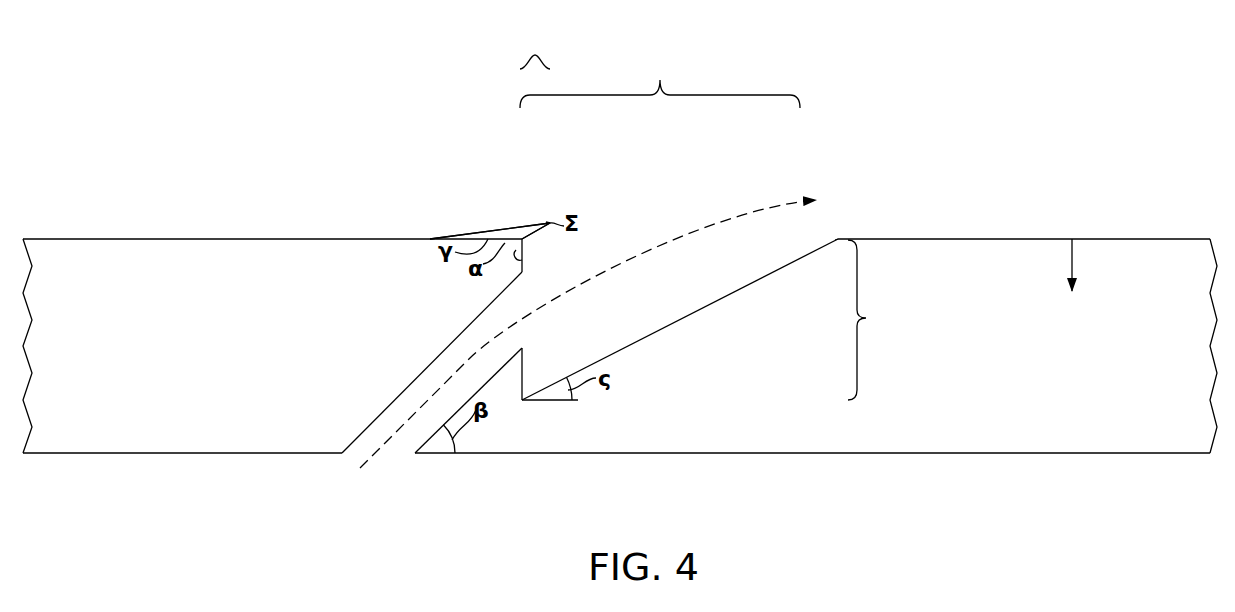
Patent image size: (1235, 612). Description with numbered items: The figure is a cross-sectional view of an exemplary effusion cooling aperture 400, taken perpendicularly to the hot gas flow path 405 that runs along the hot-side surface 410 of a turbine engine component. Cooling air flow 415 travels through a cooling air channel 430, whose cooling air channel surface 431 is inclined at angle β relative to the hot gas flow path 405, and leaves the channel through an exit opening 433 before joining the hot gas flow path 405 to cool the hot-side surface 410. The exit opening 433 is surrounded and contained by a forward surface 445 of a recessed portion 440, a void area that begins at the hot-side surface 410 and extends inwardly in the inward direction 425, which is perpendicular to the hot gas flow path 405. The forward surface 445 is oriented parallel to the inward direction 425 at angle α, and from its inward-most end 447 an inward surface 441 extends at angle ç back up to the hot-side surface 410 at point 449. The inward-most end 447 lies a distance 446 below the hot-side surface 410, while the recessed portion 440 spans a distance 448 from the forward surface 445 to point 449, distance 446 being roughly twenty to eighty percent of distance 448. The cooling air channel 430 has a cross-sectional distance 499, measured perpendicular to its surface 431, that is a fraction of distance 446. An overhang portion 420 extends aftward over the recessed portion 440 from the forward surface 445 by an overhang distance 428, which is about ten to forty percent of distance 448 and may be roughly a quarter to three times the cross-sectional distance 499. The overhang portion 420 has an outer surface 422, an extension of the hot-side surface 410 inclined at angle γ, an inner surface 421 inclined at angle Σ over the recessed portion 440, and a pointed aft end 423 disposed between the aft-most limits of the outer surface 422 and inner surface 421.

The effusion cooling aperture 400 is at (246, 175).
The hot gas flow path 405 is at (874, 75).
The hot-side surface 410 is at (126, 239).
The cooling air flow 415 is at (387, 443).
The overhang portion 420 is at (555, 212).
The inner surface 421 is at (540, 240).
The outer surface 422 is at (480, 237).
The aft end 423 is at (548, 218).
The inward direction 425 is at (1072, 262).
The overhang distance 428 is at (531, 46).
The cooling air channel 430 is at (388, 420).
The cooling air channel surface 431 is at (422, 373).
The exit opening 433 is at (505, 319).
The recessed portion 440 is at (632, 326).
The inward surface 441 is at (698, 312).
The forward surface 445 is at (523, 262).
The distance 446 is at (885, 320).
The inward-most end 447 is at (520, 400).
The distance 448 is at (660, 79).
The point 449 is at (840, 240).
The cross-sectional distance 499 is at (373, 493).